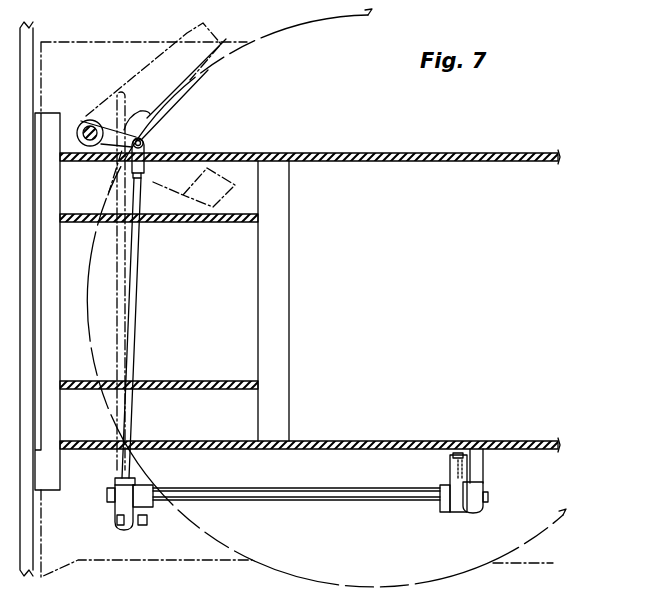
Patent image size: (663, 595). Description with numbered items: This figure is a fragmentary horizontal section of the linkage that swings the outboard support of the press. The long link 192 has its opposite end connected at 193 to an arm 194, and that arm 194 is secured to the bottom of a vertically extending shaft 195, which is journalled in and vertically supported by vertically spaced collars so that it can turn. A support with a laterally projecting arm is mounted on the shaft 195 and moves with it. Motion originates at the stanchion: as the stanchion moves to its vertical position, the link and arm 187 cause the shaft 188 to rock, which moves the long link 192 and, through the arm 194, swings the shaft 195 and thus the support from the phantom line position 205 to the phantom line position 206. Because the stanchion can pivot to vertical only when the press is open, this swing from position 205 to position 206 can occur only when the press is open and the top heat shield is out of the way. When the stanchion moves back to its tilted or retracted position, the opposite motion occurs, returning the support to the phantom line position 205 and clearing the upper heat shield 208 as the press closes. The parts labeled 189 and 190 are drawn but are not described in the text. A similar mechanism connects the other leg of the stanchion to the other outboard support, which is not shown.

The arm 187 is at (450, 510).
The shaft 188 is at (311, 501).
The clevis 189 is at (115, 507).
The actuator 190 is at (473, 513).
The long link 192 is at (138, 308).
The connection 193 is at (145, 142).
The arm 194 is at (147, 118).
The vertically extending shaft 195 is at (88, 124).
The phantom line position 205 is at (187, 33).
The phantom line position 206 is at (174, 226).
The upper heat shield 208 is at (313, 26).